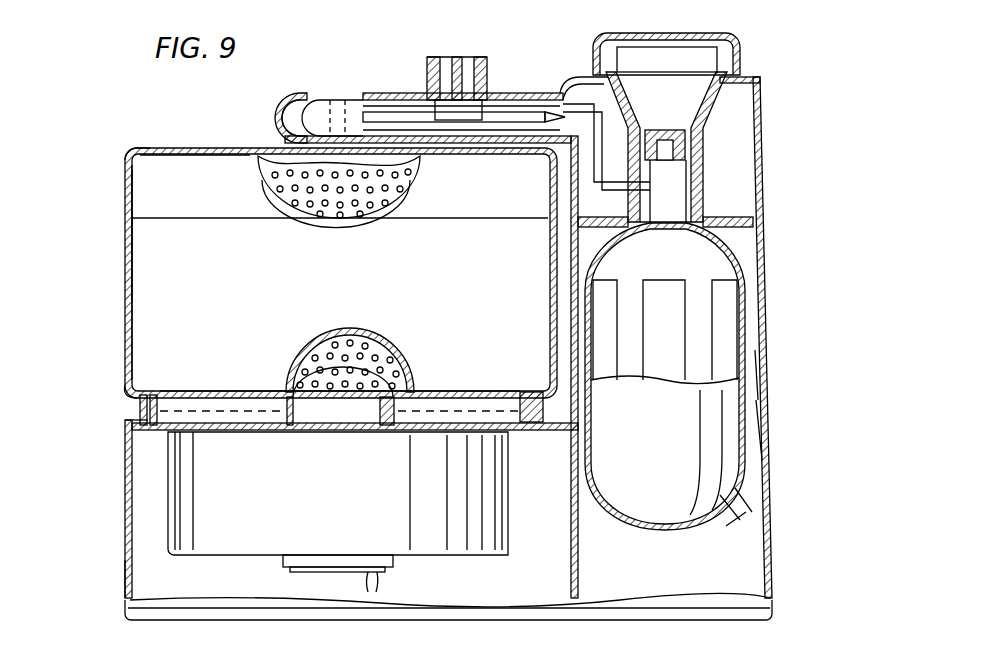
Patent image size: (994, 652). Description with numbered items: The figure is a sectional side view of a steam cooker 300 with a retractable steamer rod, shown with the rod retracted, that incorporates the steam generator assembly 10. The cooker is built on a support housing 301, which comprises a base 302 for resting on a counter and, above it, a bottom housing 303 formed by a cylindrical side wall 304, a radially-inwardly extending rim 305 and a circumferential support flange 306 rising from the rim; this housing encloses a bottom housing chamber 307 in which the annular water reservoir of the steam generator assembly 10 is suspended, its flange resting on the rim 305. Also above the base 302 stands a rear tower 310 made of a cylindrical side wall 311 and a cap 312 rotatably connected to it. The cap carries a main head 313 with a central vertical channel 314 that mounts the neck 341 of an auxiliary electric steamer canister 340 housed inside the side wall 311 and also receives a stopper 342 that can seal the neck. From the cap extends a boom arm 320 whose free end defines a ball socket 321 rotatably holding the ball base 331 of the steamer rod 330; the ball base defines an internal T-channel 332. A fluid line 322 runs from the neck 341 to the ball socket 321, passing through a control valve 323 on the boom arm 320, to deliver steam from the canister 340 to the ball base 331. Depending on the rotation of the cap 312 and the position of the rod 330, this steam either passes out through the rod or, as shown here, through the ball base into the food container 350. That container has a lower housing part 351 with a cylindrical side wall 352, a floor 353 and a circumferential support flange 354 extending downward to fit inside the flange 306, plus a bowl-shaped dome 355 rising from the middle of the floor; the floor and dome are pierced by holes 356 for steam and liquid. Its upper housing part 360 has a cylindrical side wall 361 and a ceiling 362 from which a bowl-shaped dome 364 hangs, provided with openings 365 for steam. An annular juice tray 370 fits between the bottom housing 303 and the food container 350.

The steam generator assembly 10 is at (530, 565).
The steam cooker 300 is at (822, 491).
The support housing 301 is at (818, 539).
The base 302 is at (697, 615).
The bottom housing 303 is at (125, 540).
The cylindrical side wall 304 is at (125, 578).
The rim 305 is at (556, 440).
The circumferential support flange 306 is at (138, 423).
The bottom housing chamber 307 is at (258, 592).
The rear tower 310 is at (762, 440).
The cylindrical side wall 311 is at (758, 392).
The cap 312 is at (757, 186).
The main head 313 is at (757, 97).
The central vertical channel 314 is at (705, 205).
The boom arm 320 is at (541, 93).
The ball socket 321 is at (285, 115).
The fluid line 322 is at (600, 184).
The control valve 323 is at (460, 57).
The steamer rod 330 is at (417, 124).
The ball base 331 is at (352, 113).
The internal T-channel 332 is at (332, 93).
The auxiliary electric steamer canister 340 is at (740, 305).
The neck 341 is at (700, 160).
The stopper 342 is at (735, 40).
The food container 350 is at (76, 323).
The lower housing part 351 is at (125, 358).
The cylindrical side wall 352 is at (125, 385).
The floor 353 is at (450, 374).
The circumferential support flange 354 is at (528, 392).
The bowl-shaped dome 355 is at (384, 346).
The holes 356 is at (298, 348).
The upper housing part 360 is at (135, 150).
The cylindrical side wall 361 is at (120, 183).
The ceiling 362 is at (183, 148).
The bowl-shaped dome 364 is at (315, 213).
The openings 365 is at (324, 218).
The annular juice tray 370 is at (240, 374).